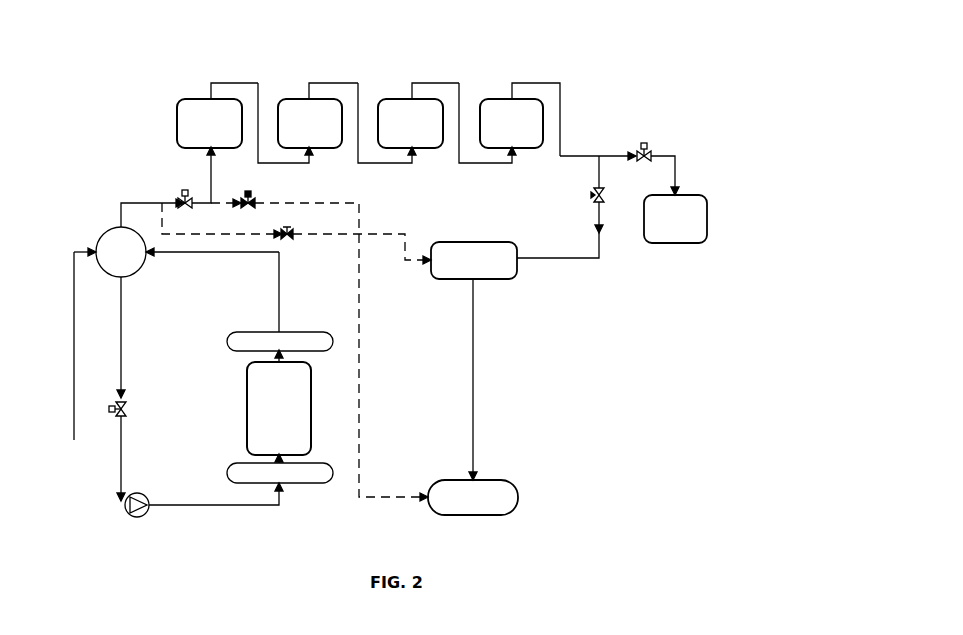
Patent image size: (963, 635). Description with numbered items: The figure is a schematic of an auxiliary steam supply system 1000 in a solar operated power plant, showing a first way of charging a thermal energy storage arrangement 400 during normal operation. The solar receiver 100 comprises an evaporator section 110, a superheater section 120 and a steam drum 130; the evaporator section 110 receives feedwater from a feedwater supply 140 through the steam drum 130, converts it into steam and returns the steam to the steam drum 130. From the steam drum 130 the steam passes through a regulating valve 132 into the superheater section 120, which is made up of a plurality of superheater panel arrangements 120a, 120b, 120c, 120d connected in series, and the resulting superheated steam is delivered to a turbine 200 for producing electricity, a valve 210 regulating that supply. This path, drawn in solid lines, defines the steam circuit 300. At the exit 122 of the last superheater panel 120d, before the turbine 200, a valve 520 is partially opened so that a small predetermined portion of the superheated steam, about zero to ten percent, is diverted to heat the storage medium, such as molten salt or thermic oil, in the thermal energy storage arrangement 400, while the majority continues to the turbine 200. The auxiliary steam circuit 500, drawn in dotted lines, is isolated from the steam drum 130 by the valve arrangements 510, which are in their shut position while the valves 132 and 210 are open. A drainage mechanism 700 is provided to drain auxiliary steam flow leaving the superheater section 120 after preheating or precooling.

The auxiliary steam supply system 1000 is at (671, 86).
The solar receiver 100 is at (108, 115).
The evaporator section 110 is at (232, 393).
The superheater section 120 is at (356, 78).
The superheater panel arrangement 120a is at (188, 108).
The superheater panel arrangement 120b is at (291, 106).
The superheater panel arrangement 120c is at (388, 105).
The superheater panel arrangement 120d is at (490, 105).
The exit of the superheater panels 122 is at (591, 172).
The steam drum 130 is at (101, 232).
The regulating valve 132 is at (180, 195).
The feedwater supply 140 is at (71, 456).
The turbine 200 is at (718, 233).
The valve 210 is at (638, 141).
The steam circuit 300 is at (428, 143).
The thermal energy storage arrangement 400 is at (509, 293).
The auxiliary steam circuit 500 is at (315, 190).
The valve arrangements 510 is at (263, 196).
The valve 520 is at (607, 199).
The drainage mechanism 700 is at (526, 479).